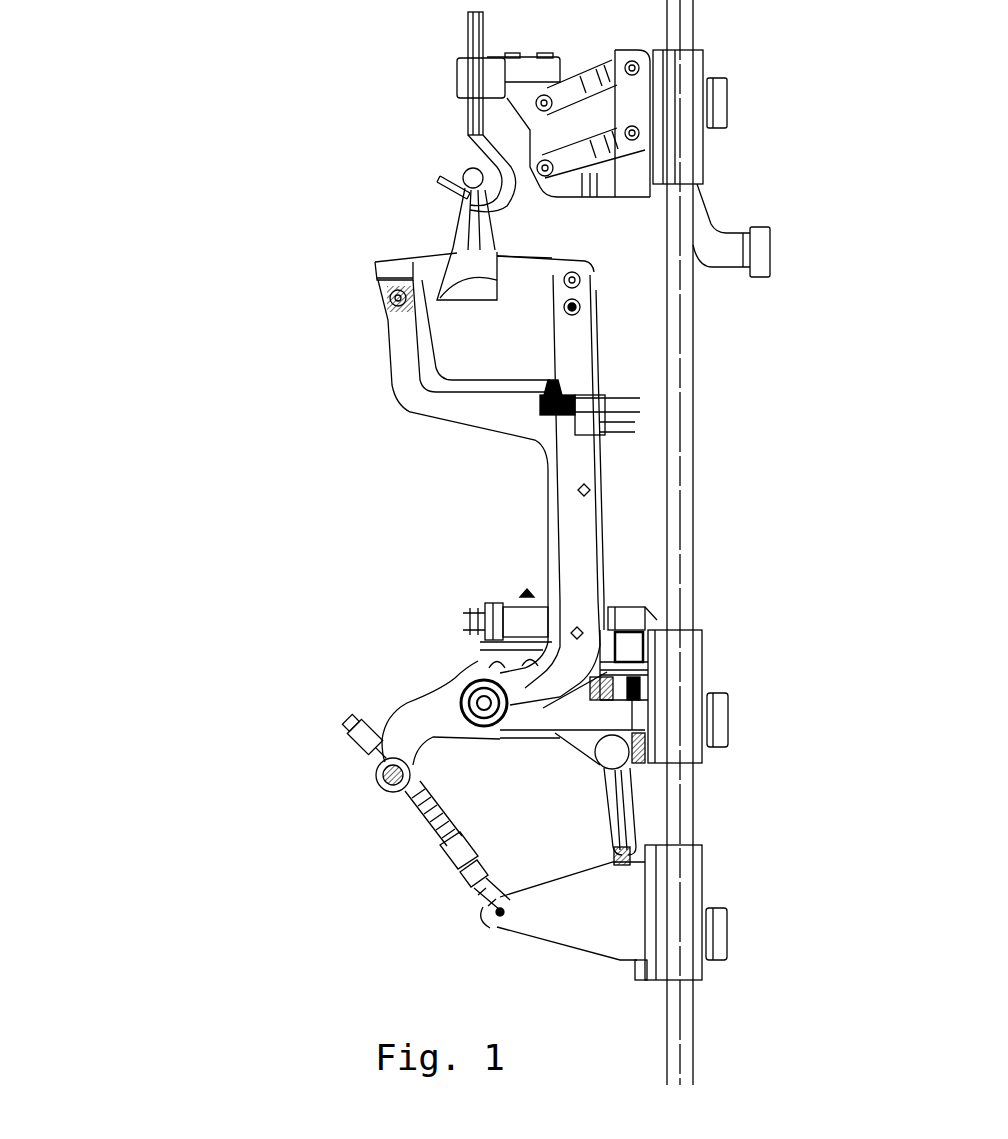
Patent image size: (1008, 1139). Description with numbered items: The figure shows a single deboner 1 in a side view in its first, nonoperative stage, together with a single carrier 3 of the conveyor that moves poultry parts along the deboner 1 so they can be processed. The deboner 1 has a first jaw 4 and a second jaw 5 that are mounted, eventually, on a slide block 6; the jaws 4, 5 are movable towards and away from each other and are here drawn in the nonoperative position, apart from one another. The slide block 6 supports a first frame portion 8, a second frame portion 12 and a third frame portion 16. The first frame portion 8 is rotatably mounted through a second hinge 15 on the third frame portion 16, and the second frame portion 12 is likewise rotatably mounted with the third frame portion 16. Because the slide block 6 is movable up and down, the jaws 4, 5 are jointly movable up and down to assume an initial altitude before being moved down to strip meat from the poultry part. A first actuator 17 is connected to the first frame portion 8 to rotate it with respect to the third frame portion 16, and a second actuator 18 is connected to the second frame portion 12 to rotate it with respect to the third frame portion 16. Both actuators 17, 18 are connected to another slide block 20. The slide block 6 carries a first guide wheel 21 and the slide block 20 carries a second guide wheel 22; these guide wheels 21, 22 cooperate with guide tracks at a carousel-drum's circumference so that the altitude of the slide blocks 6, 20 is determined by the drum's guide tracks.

The deboner 1 is at (298, 363).
The carrier 3 is at (442, 117).
The first jaw 4 is at (532, 251).
The second jaw 5 is at (418, 250).
The slide block 6 is at (670, 675).
The first frame portion 8 is at (582, 485).
The second frame portion 12 is at (490, 447).
The second hinge 15 is at (462, 691).
The third frame portion 16 is at (578, 750).
The first actuator 17 is at (438, 853).
The second actuator 18 is at (636, 803).
The slide block 20 is at (690, 872).
The first guide wheel 21 is at (740, 725).
The second guide wheel 22 is at (738, 925).